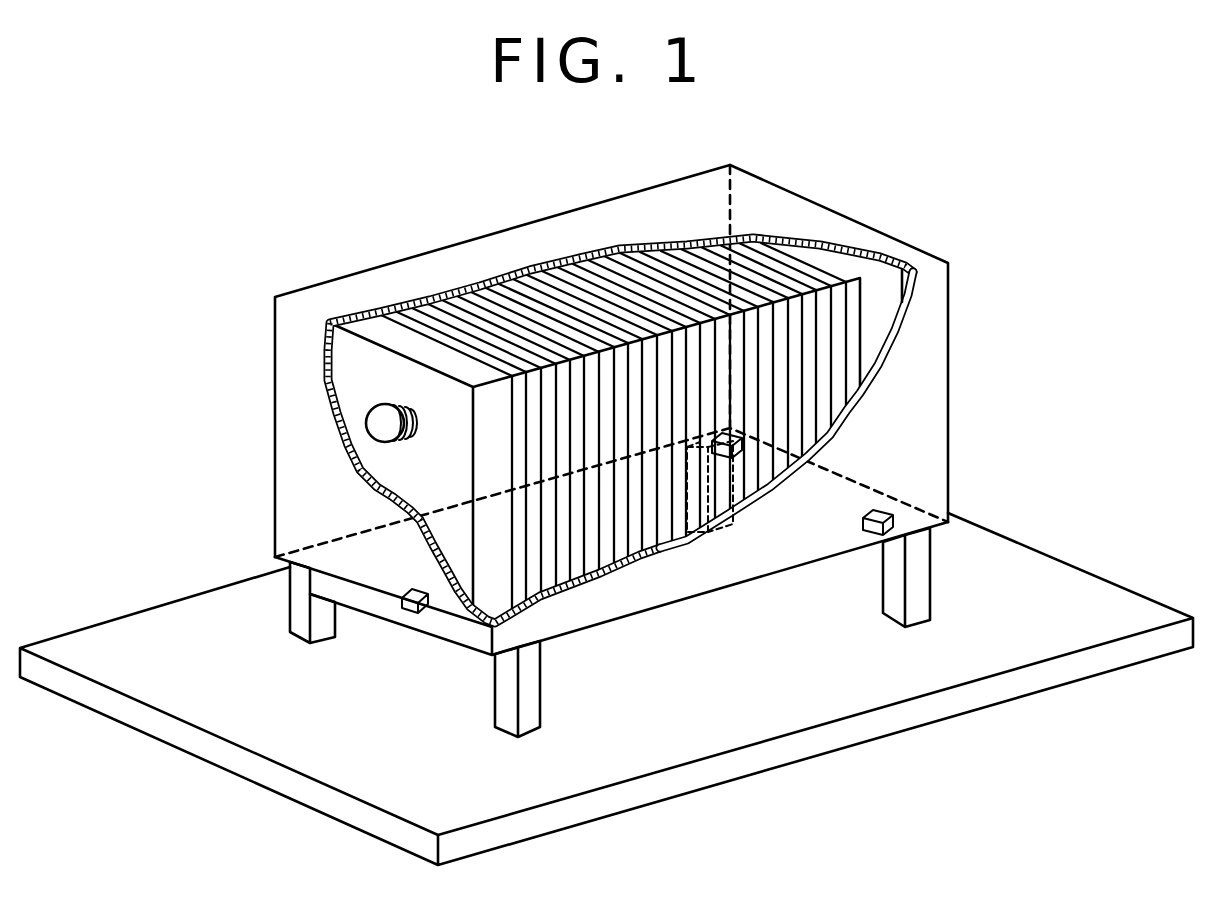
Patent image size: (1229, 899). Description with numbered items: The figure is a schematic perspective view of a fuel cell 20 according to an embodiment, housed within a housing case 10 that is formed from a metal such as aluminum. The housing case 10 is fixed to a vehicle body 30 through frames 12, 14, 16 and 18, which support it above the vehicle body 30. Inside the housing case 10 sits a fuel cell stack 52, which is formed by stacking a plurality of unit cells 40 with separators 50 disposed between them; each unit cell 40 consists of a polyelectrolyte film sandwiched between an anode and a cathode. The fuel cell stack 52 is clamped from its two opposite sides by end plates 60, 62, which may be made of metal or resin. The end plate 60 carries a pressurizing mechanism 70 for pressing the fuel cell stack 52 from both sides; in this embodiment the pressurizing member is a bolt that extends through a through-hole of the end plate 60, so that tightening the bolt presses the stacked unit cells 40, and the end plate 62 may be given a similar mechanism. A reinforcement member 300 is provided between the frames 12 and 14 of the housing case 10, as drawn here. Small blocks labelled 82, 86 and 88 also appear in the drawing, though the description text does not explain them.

The housing case 10 is at (930, 413).
The frame 12 is at (528, 705).
The frame 14 is at (325, 620).
The frame 16 is at (915, 578).
The frame 18 is at (738, 487).
The fuel cell 20 is at (810, 184).
The vehicle body 30 is at (938, 708).
The unit cell 40 is at (512, 317).
The separator 50 is at (488, 310).
The fuel cell stack 52 is at (390, 196).
The end plate 60 is at (343, 358).
The end plate 62 is at (857, 263).
The pressurizing mechanism 70 is at (368, 425).
The sensor 82 is at (409, 589).
The sensor 86 is at (885, 508).
The sensor 88 is at (745, 437).
The reinforcement member 300 is at (442, 640).